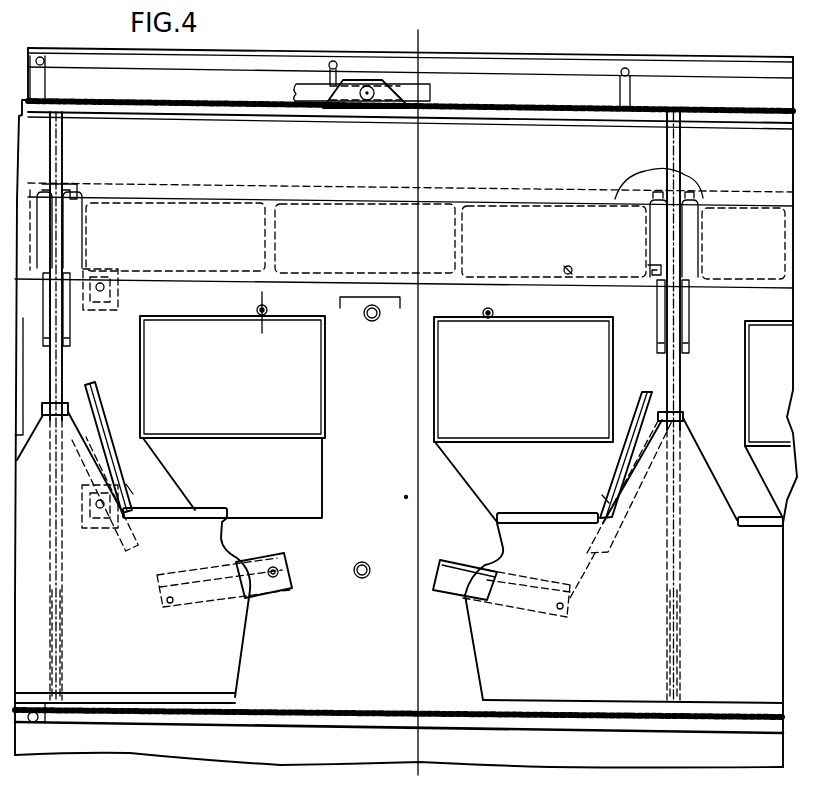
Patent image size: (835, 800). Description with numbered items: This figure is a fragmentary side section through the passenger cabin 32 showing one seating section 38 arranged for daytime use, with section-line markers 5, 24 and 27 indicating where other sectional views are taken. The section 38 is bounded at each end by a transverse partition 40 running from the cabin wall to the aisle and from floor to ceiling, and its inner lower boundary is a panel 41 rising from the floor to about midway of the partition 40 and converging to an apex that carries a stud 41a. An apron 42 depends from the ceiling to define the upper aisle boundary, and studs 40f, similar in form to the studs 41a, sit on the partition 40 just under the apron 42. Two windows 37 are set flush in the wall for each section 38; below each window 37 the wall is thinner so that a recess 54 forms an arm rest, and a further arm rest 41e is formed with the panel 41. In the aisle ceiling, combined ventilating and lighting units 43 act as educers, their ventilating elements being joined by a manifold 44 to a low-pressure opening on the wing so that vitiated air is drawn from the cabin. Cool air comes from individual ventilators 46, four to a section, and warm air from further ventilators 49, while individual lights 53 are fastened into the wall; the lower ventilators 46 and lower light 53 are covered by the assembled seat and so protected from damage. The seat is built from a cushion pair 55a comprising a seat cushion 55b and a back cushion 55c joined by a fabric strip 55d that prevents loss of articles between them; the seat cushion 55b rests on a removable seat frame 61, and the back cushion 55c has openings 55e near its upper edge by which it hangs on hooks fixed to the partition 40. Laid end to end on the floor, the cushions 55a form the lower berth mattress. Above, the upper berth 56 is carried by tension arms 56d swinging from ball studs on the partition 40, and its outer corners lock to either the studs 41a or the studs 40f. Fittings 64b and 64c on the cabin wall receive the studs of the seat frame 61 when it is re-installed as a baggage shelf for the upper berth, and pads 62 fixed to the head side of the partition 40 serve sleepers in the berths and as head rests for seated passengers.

The section line 5- 5 is at (418, 30).
The section line 24- 24 is at (397, 304).
The section line 27- 27 is at (268, 330).
The passenger cabin 32 is at (405, 497).
The window 37 is at (752, 408).
The section 38 is at (369, 454).
The transverse partition 40 is at (64, 355).
The stud 40f is at (63, 186).
The panel 41 is at (234, 663).
The stud 41a is at (96, 386).
The arm rest 41e is at (208, 520).
The apron 42 is at (295, 190).
The combined ventilating and lighting unit 43 is at (362, 110).
The manifold 44 is at (440, 95).
The cool air ventilator 46 is at (255, 310).
The warm air ventilator 49 is at (366, 322).
The light 53 is at (119, 298).
The recess 54 is at (775, 470).
The cushion pair 55a is at (593, 496).
The seat cushion 55b is at (157, 600).
The back cushion 55c is at (130, 555).
The fabric strip 55d is at (585, 575).
The opening 55e is at (142, 482).
The upper berth 56 is at (178, 268).
The tension arm 56d is at (70, 318).
The seat frame 61 is at (265, 598).
The pad 62 is at (62, 635).
The fitting 64b is at (564, 270).
The fitting 64c is at (648, 268).